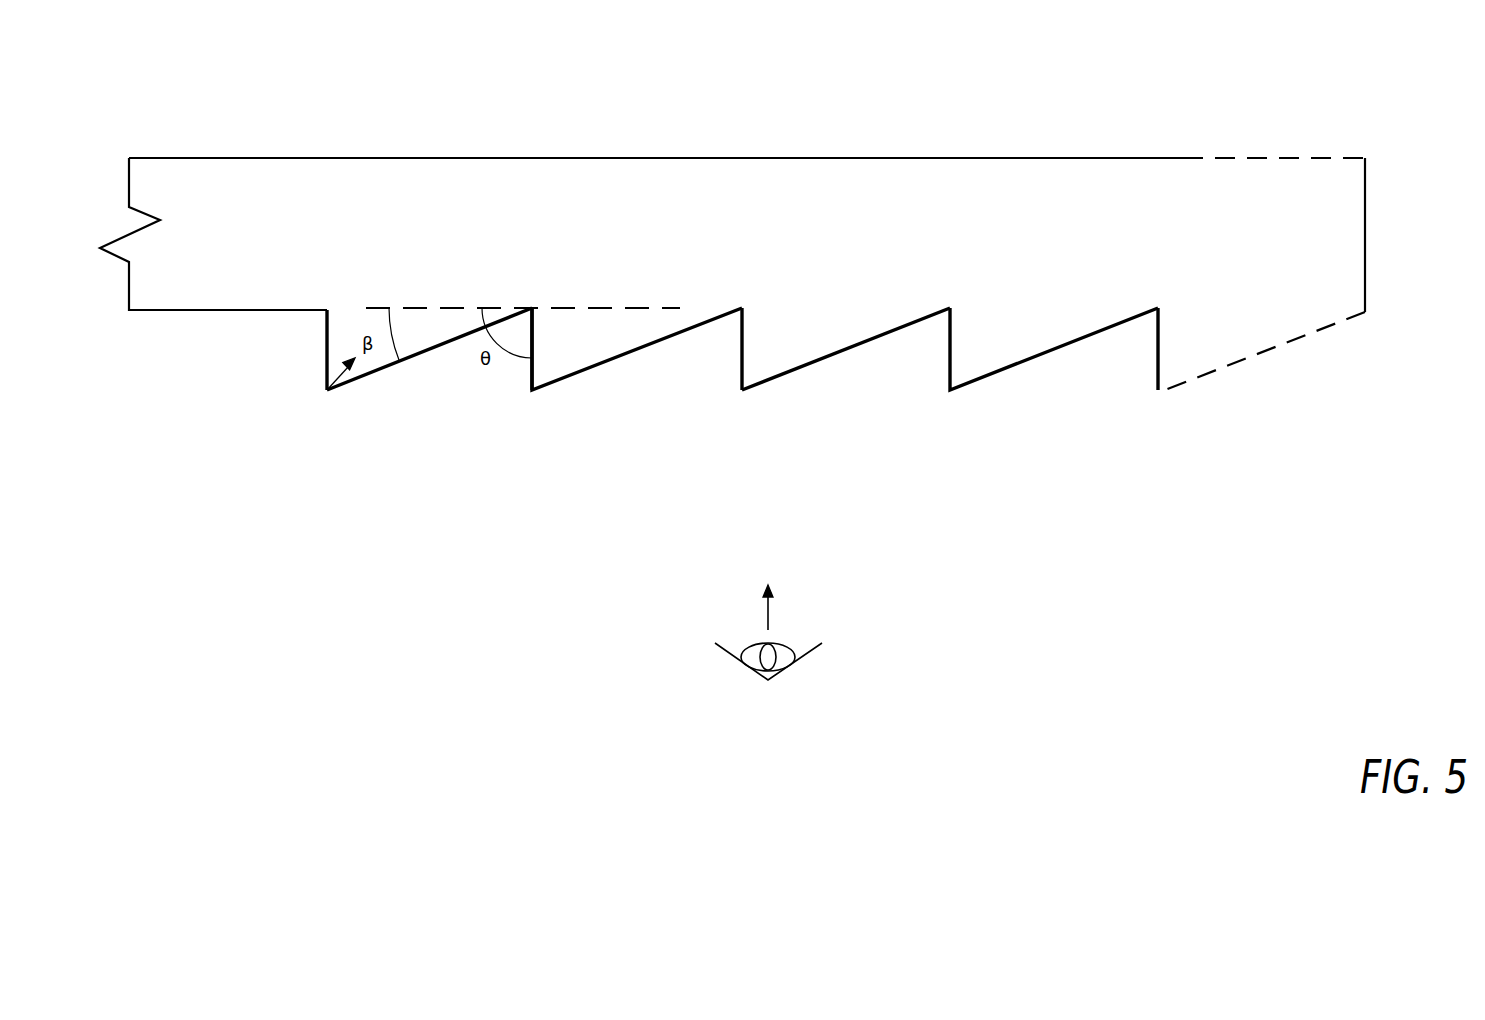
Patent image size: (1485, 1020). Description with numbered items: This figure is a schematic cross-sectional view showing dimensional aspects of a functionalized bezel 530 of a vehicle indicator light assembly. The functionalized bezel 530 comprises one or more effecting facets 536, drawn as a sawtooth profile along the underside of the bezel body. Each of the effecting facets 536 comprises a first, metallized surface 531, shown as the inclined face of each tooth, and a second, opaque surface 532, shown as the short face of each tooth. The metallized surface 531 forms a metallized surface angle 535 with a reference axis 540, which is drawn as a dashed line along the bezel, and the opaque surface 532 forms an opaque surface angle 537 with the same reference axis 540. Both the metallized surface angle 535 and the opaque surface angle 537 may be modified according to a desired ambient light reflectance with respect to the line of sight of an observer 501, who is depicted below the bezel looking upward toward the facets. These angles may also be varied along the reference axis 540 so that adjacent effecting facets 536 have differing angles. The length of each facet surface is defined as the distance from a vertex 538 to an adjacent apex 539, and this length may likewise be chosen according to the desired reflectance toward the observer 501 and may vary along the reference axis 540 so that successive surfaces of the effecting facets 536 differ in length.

The functionalized bezel 530 is at (241, 105).
The reference axis 540 is at (450, 300).
The metallized surface angle 535 is at (327, 390).
The opaque surface angle 537 is at (485, 380).
The opaque surface 532 is at (741, 351).
The metallized surface 531 is at (830, 358).
The vertex 538 is at (1158, 300).
The apex 539 is at (1161, 410).
The effecting facets 536 is at (1091, 455).
The observer 501 is at (810, 667).